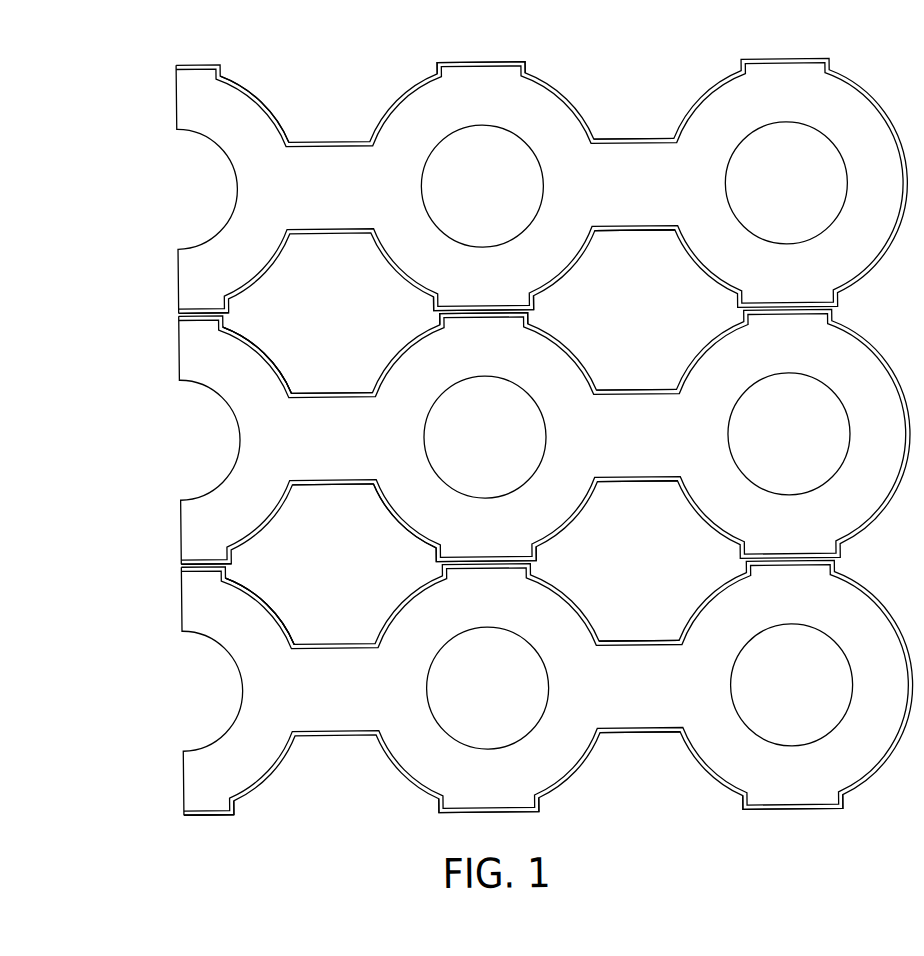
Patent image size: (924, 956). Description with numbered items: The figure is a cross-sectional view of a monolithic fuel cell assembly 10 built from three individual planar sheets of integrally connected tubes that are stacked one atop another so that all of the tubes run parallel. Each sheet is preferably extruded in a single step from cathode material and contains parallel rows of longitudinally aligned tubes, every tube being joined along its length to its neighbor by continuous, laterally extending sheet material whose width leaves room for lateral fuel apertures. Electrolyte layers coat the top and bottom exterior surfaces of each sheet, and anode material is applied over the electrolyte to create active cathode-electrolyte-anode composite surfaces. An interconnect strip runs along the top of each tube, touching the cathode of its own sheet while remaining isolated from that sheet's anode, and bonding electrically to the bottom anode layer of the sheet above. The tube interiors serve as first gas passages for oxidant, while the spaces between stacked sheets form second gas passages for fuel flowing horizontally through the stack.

The monolithic fuel cell assembly 10 is at (171, 88).